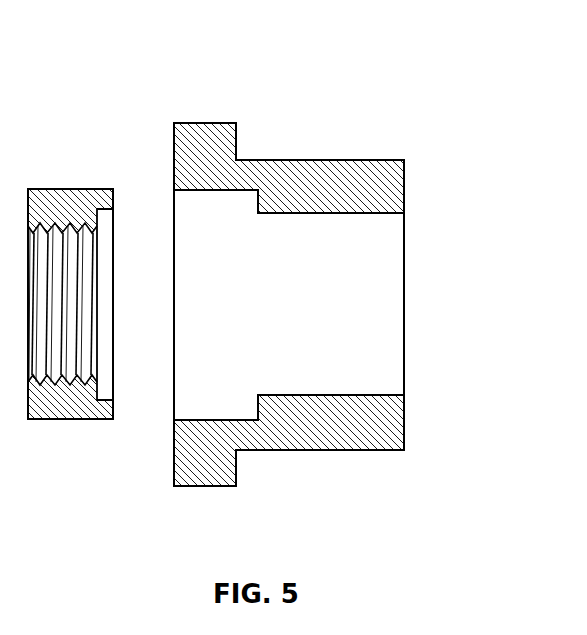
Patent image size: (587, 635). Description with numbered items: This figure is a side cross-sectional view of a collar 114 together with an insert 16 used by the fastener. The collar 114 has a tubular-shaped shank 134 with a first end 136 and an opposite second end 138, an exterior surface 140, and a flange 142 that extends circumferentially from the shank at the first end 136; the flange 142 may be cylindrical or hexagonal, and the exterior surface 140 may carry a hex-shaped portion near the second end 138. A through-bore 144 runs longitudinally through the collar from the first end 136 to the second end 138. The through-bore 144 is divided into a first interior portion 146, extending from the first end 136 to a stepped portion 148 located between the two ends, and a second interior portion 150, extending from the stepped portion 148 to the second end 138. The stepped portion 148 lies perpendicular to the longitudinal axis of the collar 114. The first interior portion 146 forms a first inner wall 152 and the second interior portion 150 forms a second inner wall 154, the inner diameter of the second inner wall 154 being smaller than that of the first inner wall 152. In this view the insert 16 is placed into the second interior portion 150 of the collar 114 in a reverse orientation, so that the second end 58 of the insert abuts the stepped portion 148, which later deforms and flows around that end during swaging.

The insert 16 is at (27, 177).
The second end 58 is at (113, 403).
The collar 114 is at (174, 70).
The shank 134 is at (372, 173).
The first end 136 is at (173, 266).
The second end 138 is at (405, 190).
The exterior surface 140 is at (380, 452).
The flange 142 is at (197, 470).
The through-bore 144 is at (387, 348).
The first interior portion 146 is at (192, 387).
The stepped portion 148 is at (258, 405).
The second interior portion 150 is at (202, 202).
The first inner wall 152 is at (240, 190).
The second inner wall 154 is at (358, 214).